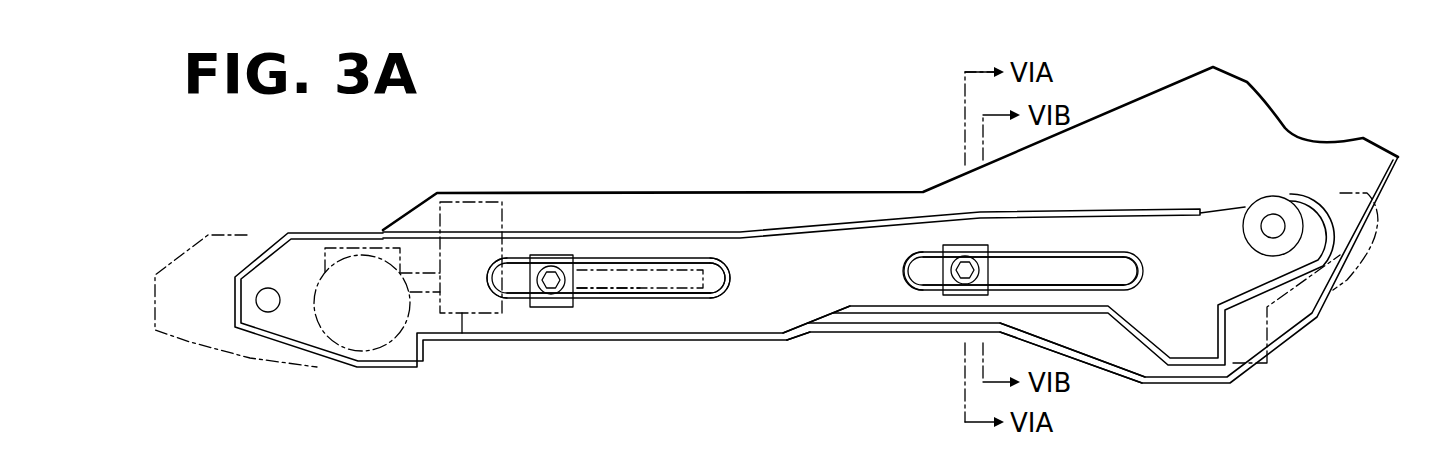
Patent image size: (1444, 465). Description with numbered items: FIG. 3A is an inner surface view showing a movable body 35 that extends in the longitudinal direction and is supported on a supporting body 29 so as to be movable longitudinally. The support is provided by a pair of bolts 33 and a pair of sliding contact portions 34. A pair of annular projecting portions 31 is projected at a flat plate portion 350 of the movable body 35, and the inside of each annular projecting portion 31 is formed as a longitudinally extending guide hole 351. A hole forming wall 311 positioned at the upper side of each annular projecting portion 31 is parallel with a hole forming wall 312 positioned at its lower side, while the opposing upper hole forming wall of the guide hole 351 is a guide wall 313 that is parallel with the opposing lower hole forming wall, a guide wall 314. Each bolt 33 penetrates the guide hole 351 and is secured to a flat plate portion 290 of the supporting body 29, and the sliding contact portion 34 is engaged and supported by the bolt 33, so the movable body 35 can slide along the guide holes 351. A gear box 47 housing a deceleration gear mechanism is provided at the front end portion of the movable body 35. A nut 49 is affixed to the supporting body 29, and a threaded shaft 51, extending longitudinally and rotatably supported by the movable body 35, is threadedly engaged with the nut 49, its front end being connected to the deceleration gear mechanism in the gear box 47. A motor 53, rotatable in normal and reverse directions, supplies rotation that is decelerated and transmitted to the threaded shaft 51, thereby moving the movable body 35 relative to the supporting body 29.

The supporting body 29 is at (1233, 382).
The flat plate portion 290 is at (1113, 357).
The annular projecting portion 31 is at (733, 280).
The hole forming wall 311 is at (623, 258).
The hole forming wall 312 is at (662, 287).
The guide wall 313 is at (672, 268).
The guide wall 314 is at (660, 287).
The bolt 33 is at (552, 297).
The sliding contact portion 34 is at (547, 255).
The movable body 35 is at (190, 343).
The flat plate portion 350 is at (777, 320).
The guide hole 351 is at (728, 255).
The gear box 47 is at (343, 247).
The nut 49 is at (463, 350).
The threaded shaft 51 is at (613, 293).
The motor 53 is at (327, 337).